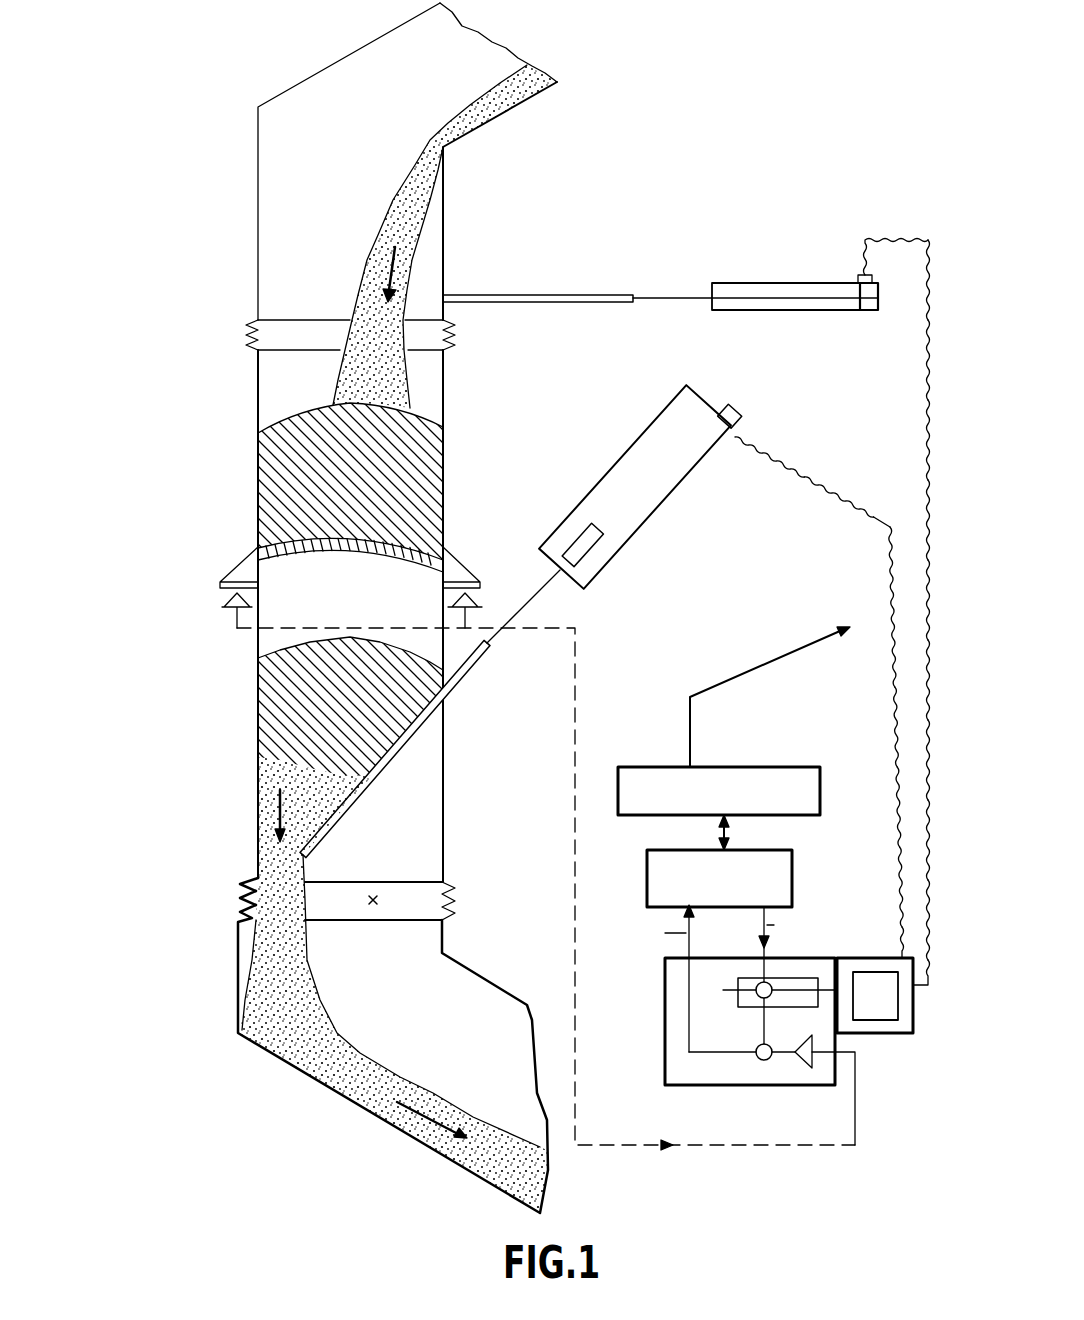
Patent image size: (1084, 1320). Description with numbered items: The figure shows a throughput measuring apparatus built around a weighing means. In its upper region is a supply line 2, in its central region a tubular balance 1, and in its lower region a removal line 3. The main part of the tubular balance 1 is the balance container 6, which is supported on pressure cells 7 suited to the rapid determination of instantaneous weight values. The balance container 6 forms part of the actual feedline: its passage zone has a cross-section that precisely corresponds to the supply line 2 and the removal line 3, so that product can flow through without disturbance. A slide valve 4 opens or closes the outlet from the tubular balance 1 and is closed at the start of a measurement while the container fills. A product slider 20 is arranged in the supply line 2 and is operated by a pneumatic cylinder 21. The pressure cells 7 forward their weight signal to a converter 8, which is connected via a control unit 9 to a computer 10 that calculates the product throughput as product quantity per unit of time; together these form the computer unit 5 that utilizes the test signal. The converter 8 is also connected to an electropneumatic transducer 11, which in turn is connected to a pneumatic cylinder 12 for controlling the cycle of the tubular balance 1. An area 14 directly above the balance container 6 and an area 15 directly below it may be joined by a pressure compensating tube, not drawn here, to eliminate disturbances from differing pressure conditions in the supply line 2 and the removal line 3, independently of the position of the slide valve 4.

The tubular balance 1 is at (295, 655).
The supply line 2 is at (440, 97).
The removal line 3 is at (480, 1013).
The slide valve 4 is at (367, 790).
The computer unit 5 is at (624, 754).
The balance container 6 is at (443, 397).
The pressure cells 7 is at (463, 600).
The converter 8 is at (767, 1072).
The control unit 9 is at (822, 772).
The computer 10 is at (792, 858).
The electropneumatic transducer 11 is at (892, 1025).
The pneumatic cylinder 12 is at (653, 482).
The area directly above the balance container 14 is at (401, 176).
The area directly below the balance container 15 is at (380, 937).
The product slider 20 is at (608, 292).
The pneumatic cylinder 21 is at (757, 292).